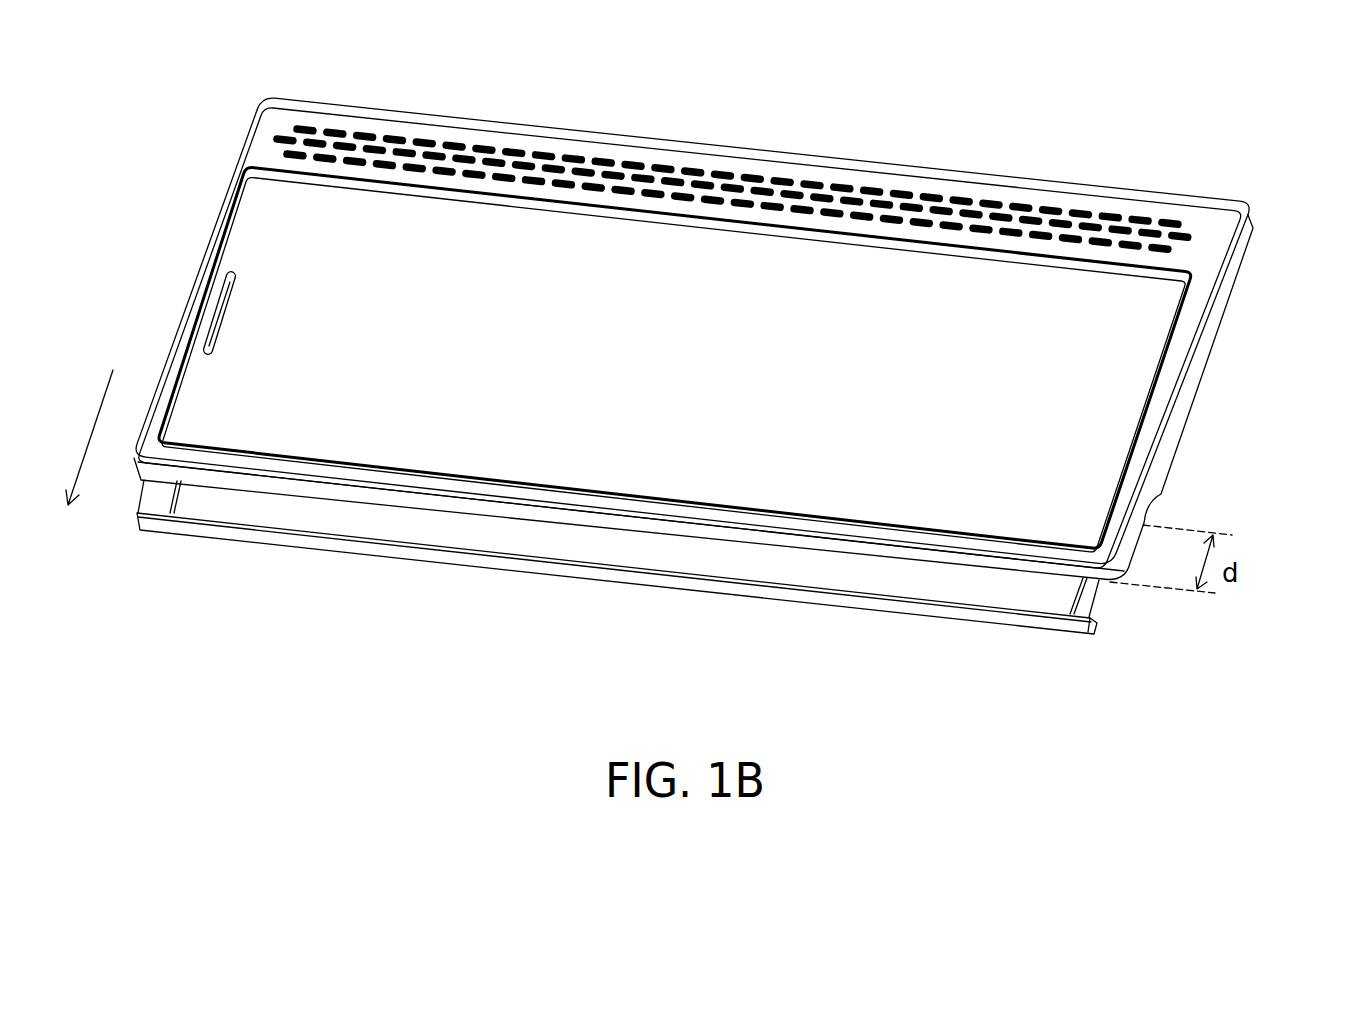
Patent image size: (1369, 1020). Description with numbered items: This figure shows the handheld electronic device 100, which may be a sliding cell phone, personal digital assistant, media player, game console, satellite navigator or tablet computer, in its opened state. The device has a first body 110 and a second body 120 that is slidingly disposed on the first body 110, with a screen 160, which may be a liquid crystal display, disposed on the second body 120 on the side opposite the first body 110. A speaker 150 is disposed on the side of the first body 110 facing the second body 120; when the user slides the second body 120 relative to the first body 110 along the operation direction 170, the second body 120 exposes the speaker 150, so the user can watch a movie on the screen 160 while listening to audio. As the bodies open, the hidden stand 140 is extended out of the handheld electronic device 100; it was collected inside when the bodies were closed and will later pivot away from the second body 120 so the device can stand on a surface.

The handheld electronic device 100 is at (1165, 746).
The first body 110 is at (1233, 273).
The second body 120 is at (1180, 398).
The stand 140 is at (987, 607).
The speaker 150 is at (1151, 220).
The screen 160 is at (270, 242).
The operation direction 170 is at (87, 447).